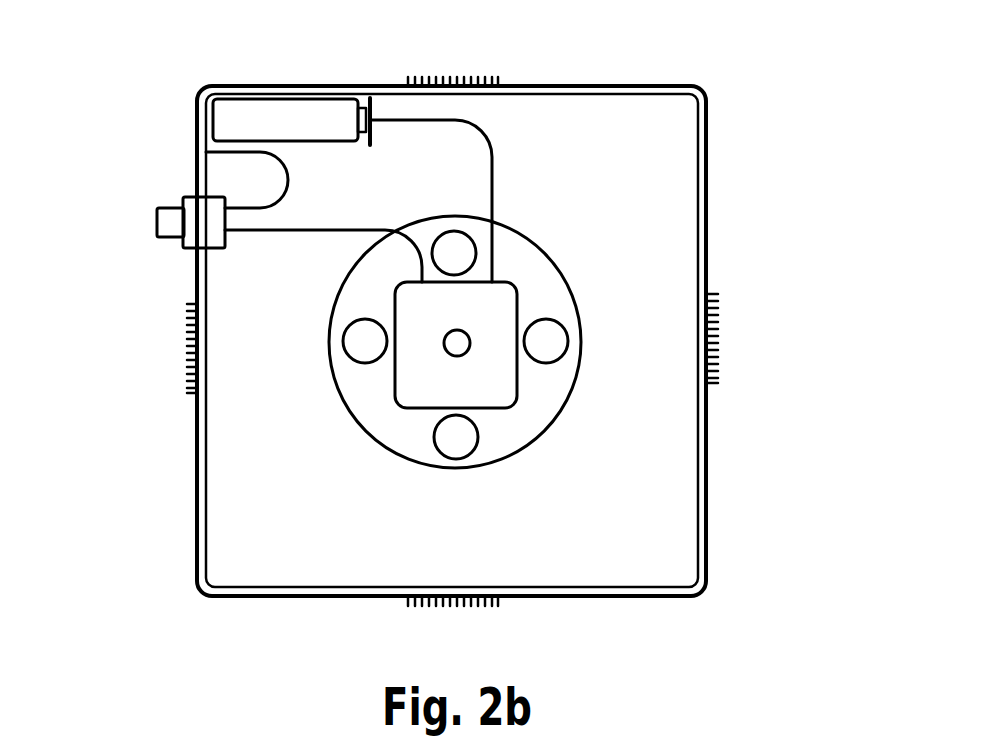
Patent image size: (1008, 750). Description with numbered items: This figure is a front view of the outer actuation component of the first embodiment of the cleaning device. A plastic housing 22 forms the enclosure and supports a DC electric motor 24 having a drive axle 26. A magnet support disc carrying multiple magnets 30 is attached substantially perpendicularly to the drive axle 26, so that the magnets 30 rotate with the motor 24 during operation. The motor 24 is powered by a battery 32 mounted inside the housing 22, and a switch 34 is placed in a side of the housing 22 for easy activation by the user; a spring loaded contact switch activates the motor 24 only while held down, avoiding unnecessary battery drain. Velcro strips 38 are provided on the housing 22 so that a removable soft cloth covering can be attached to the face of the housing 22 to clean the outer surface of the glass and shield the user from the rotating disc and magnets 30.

The plastic housing 22 is at (708, 187).
The DC electric motor 24 is at (412, 390).
The drive axle 26 is at (463, 330).
The magnets 30 is at (456, 253).
The battery 32 is at (287, 122).
The switch 34 is at (168, 198).
The Velcro strips 38 is at (470, 78).